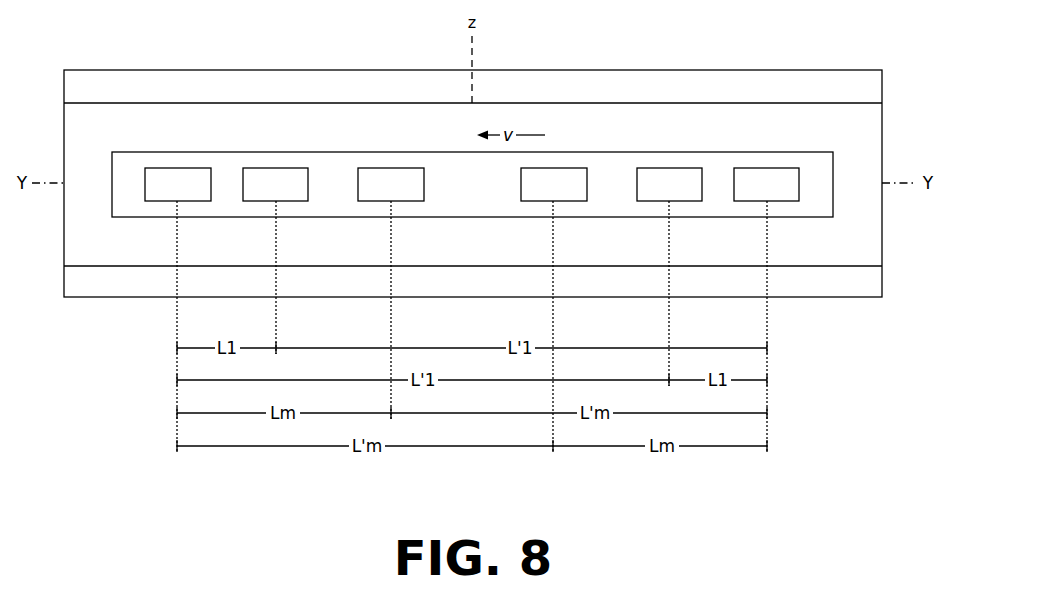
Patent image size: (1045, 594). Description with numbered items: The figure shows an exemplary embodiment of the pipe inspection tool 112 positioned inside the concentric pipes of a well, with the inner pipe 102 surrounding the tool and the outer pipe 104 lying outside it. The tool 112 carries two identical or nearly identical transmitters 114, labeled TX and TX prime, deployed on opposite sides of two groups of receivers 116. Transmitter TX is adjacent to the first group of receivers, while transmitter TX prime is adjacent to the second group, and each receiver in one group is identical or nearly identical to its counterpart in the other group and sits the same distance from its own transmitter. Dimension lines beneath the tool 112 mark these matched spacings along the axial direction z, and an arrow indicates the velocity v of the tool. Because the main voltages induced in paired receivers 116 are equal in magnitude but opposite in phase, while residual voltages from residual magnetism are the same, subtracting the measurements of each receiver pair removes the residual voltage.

The inner pipe 102 is at (146, 103).
The outer pipe 104 is at (146, 70).
The pipe inspection tool 112 is at (146, 152).
The transmitters 114 is at (180, 168).
The receivers 116 is at (279, 168).